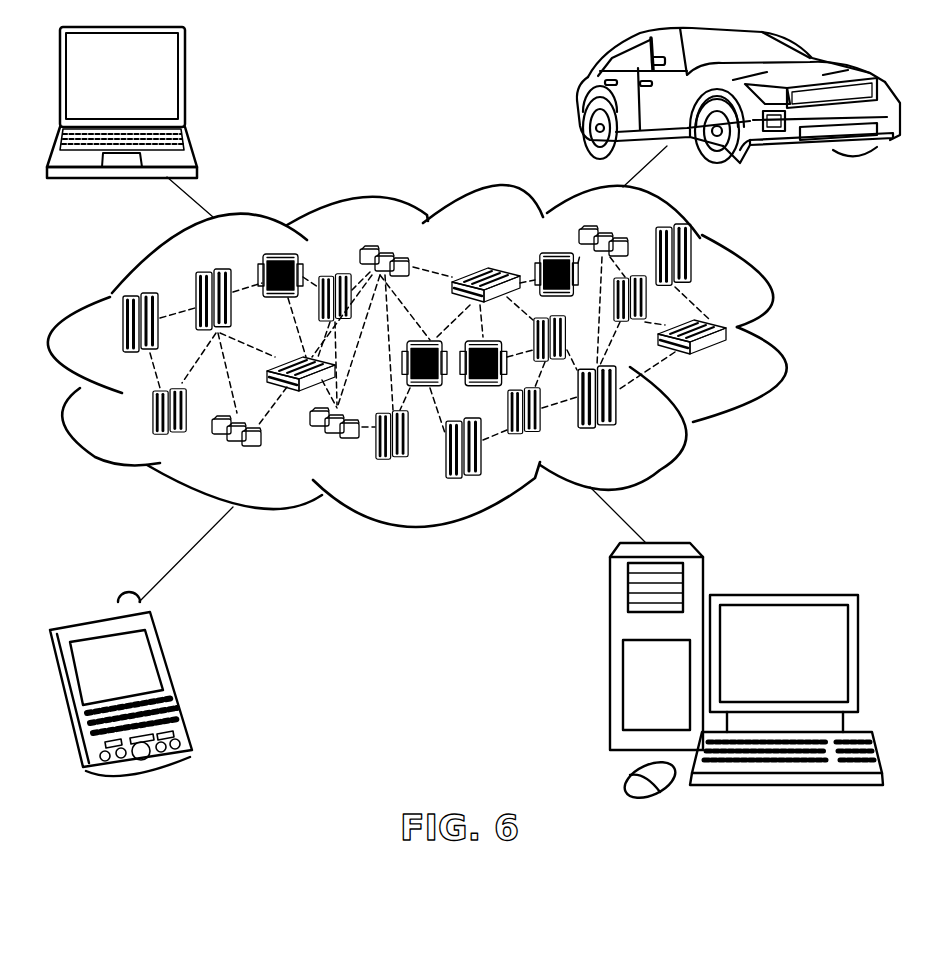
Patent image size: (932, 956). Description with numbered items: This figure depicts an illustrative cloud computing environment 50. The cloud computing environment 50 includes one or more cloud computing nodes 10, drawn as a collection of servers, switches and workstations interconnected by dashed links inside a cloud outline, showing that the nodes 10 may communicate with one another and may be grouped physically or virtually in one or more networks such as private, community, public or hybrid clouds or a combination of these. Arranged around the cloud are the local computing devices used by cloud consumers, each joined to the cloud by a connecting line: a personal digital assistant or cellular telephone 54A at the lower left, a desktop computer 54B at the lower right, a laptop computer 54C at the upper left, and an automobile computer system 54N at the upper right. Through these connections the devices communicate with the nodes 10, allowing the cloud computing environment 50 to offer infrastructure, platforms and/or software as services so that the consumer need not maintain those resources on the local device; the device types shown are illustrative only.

The cloud computing node 10 is at (735, 364).
The cloud computing environment 50 is at (783, 331).
The personal digital assistant (PDA) or cellular telephone 54A is at (177, 680).
The desktop computer 54B is at (780, 595).
The laptop computer 54C is at (185, 82).
The automobile computer system 54N is at (582, 97).